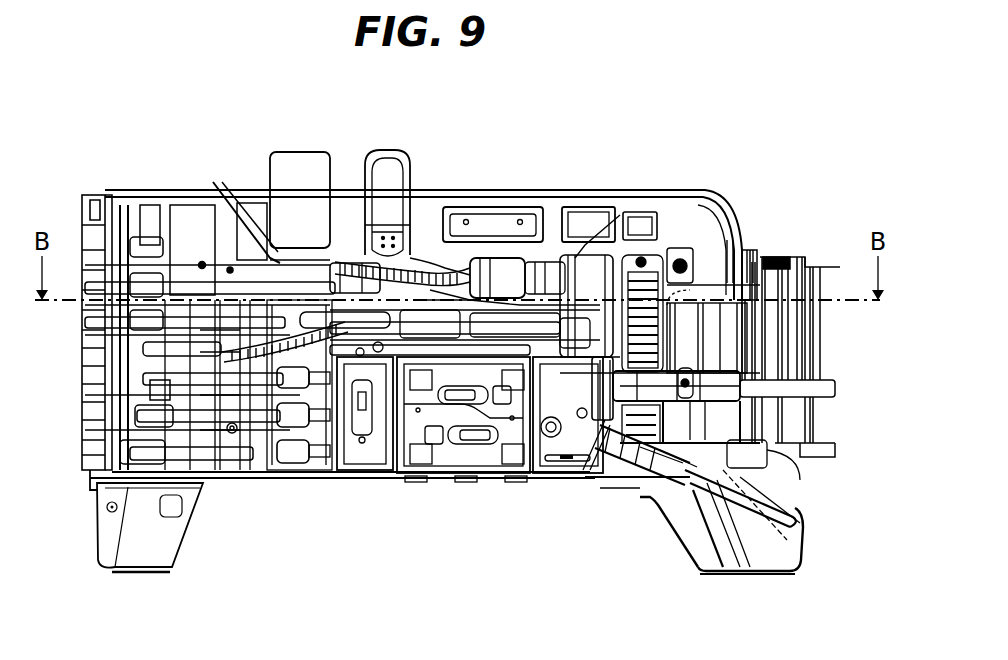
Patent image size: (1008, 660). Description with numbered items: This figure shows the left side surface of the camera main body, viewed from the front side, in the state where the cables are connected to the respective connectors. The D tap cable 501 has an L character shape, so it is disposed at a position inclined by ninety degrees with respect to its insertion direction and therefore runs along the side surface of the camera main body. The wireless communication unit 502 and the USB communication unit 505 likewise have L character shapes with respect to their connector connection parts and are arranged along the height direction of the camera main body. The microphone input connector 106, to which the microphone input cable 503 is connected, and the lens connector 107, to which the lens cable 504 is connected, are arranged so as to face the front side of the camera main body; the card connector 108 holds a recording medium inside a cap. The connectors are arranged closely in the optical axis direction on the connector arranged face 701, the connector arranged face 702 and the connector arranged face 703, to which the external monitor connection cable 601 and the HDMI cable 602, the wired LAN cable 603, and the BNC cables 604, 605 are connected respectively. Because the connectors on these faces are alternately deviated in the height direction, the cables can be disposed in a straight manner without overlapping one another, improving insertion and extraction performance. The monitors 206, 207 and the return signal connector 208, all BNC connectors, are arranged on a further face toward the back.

The microphone input connector 106 is at (614, 493).
The lens connector 107 is at (600, 478).
The card connector 108 is at (507, 430).
The monitor 206 is at (300, 395).
The monitor 207 is at (327, 420).
The return signal connector 208 is at (333, 470).
The D tap cable 501 is at (575, 206).
The wireless communication unit 502 is at (405, 160).
The microphone input cable 503 is at (650, 465).
The lens cable 504 is at (650, 485).
The USB communication unit 505 is at (300, 165).
The external monitor connection cable 601 is at (512, 278).
The HDMI cable 602 is at (541, 365).
The wired LAN cable 603 is at (435, 275).
The BNC cable 604 is at (345, 265).
The BNC cable 605 is at (358, 330).
The connector arranged face 701 is at (600, 262).
The connector arranged face 702 is at (470, 322).
The connector arranged face 703 is at (378, 352).